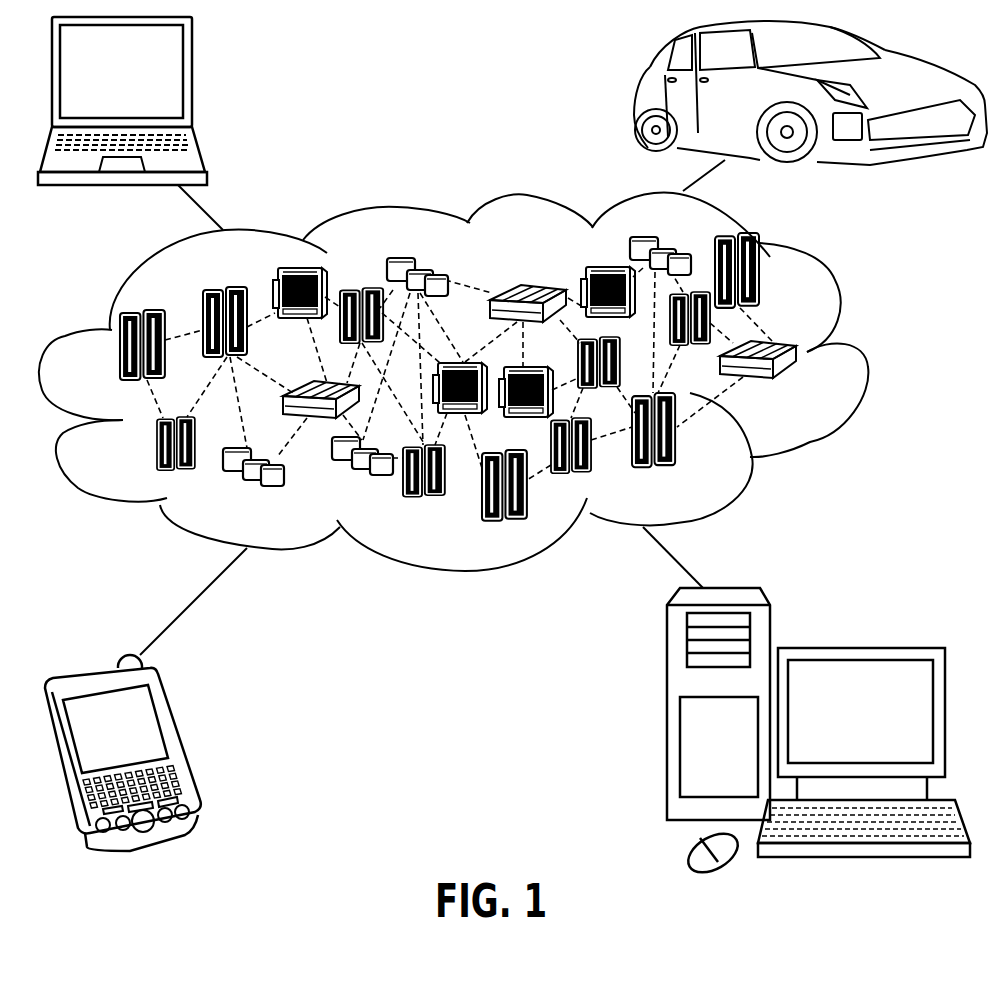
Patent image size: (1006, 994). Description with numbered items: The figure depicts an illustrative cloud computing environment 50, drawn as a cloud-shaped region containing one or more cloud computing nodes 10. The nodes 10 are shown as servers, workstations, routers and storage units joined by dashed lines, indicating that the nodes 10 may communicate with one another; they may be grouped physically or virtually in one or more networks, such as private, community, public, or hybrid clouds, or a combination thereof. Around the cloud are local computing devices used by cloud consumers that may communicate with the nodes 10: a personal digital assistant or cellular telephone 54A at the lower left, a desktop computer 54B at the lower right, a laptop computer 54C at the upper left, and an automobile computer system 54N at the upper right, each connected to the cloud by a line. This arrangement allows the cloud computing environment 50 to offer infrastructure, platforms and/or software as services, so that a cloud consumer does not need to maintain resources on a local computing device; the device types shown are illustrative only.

The cloud computing nodes 10 is at (511, 377).
The cloud computing environment 50 is at (862, 356).
The personal digital assistant (PDA) or cellular telephone 54A is at (182, 743).
The desktop computer 54B is at (858, 648).
The laptop computer 54C is at (193, 81).
The automobile computer system 54N is at (636, 98).